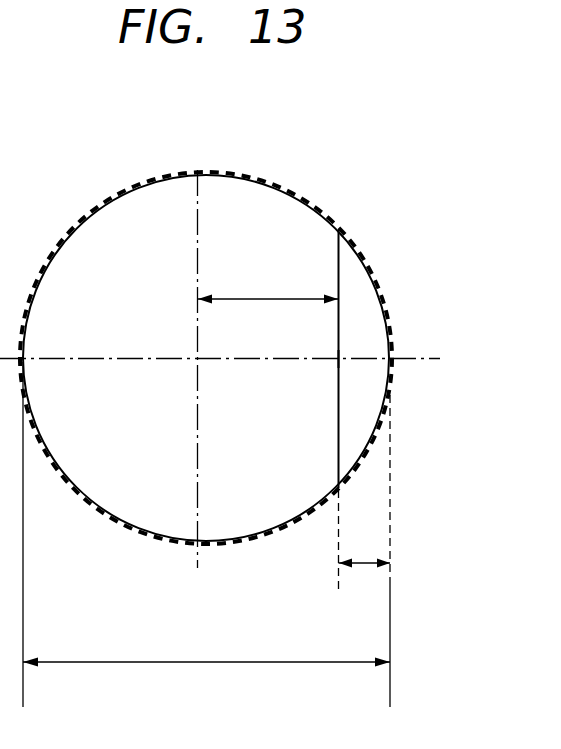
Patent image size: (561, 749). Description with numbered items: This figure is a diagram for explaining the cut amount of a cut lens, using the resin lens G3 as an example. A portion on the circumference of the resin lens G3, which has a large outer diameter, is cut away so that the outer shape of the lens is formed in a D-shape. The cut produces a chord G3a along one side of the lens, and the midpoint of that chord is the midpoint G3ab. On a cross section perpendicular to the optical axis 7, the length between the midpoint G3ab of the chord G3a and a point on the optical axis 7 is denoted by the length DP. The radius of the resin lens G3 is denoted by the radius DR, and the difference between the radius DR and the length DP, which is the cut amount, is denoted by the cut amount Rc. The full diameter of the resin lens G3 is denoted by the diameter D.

The resin lens G3 is at (296, 162).
The chord G3a is at (339, 335).
The midpoint of the chord G3ab is at (339, 360).
The optical axis 7 is at (198, 359).
The radius of the resin lens DR is at (197, 250).
The length between the midpoint of the chord and a point on the optical axis DP is at (268, 286).
The cut amount Rc is at (365, 497).
The diameter of the resin lens D is at (206, 534).